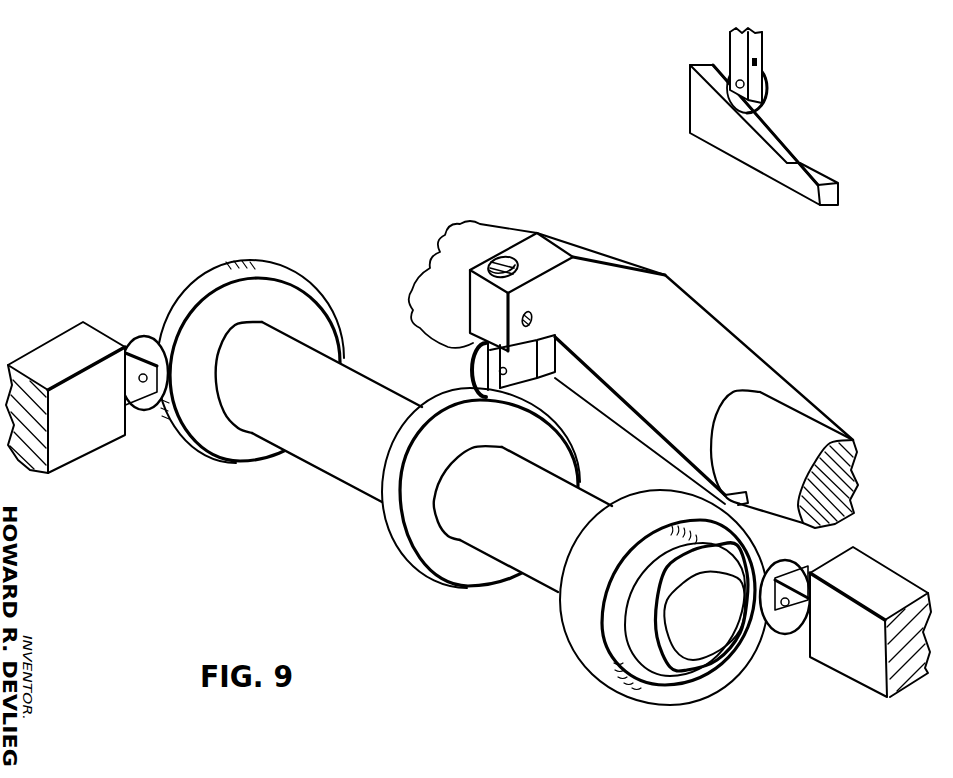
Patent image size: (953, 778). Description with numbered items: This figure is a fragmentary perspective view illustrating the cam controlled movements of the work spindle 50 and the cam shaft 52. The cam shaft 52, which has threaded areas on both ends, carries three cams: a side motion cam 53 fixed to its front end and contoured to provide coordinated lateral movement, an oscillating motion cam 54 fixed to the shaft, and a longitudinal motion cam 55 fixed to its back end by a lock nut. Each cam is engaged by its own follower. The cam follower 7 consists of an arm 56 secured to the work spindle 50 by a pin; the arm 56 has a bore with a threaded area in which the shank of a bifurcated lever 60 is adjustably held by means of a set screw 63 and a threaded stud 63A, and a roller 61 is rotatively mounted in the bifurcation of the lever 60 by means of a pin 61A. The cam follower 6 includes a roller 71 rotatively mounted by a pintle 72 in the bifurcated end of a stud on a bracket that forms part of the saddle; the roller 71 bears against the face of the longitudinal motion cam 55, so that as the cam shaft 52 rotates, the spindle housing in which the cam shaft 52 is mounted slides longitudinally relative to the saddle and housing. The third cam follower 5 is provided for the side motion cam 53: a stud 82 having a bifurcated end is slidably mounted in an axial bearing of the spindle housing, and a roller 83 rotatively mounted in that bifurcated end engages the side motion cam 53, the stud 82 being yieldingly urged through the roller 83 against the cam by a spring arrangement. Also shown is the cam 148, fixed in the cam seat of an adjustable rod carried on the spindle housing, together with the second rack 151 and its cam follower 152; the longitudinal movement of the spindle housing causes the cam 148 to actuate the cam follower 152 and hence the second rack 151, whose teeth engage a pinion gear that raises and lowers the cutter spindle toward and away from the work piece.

The third cam follower 5 is at (136, 436).
The cam follower 6 is at (786, 650).
The cam follower 7 is at (459, 360).
The work spindle 50 is at (790, 457).
The cam shaft 52 is at (337, 414).
The side motion cam 53 is at (256, 447).
The oscillating motion cam 54 is at (446, 576).
The longitudinal motion cam 55 is at (570, 630).
The arm 56 is at (702, 336).
The bifurcated lever 60 is at (478, 344).
The roller 61 is at (472, 373).
The pin 61A is at (504, 378).
The set screw 63 is at (533, 314).
The threaded stud 63A is at (513, 258).
The roller 71 is at (812, 556).
The pintle 72 is at (788, 604).
The stud 82 is at (70, 337).
The roller 83 is at (137, 343).
The cam 148 is at (747, 154).
The second rack 151 is at (752, 50).
The cam follower 152 is at (766, 99).